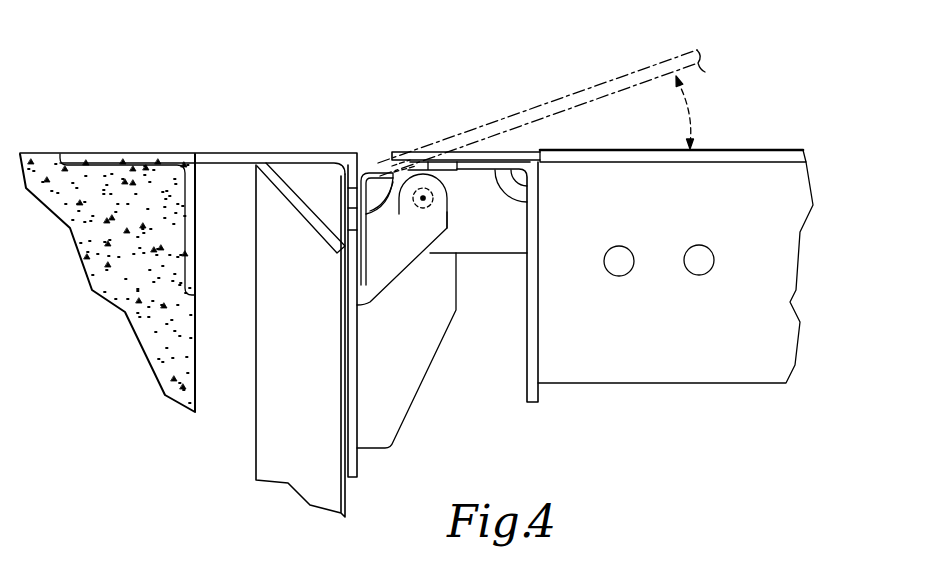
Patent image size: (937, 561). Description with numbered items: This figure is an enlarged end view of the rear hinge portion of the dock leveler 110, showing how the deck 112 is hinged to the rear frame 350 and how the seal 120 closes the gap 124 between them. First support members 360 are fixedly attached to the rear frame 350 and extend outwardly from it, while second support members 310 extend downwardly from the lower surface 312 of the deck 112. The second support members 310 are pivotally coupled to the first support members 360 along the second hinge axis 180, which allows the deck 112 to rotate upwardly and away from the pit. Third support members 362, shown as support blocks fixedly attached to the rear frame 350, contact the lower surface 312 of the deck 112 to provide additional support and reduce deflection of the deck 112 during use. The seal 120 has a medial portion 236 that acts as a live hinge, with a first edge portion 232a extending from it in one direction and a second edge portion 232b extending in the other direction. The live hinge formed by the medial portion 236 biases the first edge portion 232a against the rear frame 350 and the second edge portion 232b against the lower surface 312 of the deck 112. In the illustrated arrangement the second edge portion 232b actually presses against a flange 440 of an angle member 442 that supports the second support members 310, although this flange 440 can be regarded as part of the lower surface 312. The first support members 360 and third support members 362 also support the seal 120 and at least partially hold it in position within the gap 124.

The dock leveler 110 is at (732, 54).
The deck 112 is at (607, 82).
The seal 120 is at (396, 152).
The gap 124 is at (370, 148).
The second hinge axis 180 is at (422, 200).
The first edge portion 232a is at (356, 228).
The second edge portion 232b is at (445, 148).
The medial portion 236 is at (376, 172).
The second support members 310 is at (508, 232).
The lower surface 312 is at (503, 196).
The rear frame 350 is at (362, 176).
The first support members 360 is at (457, 318).
The third support members 362 is at (451, 222).
The flange 440 is at (513, 160).
The angle member 442 is at (532, 366).